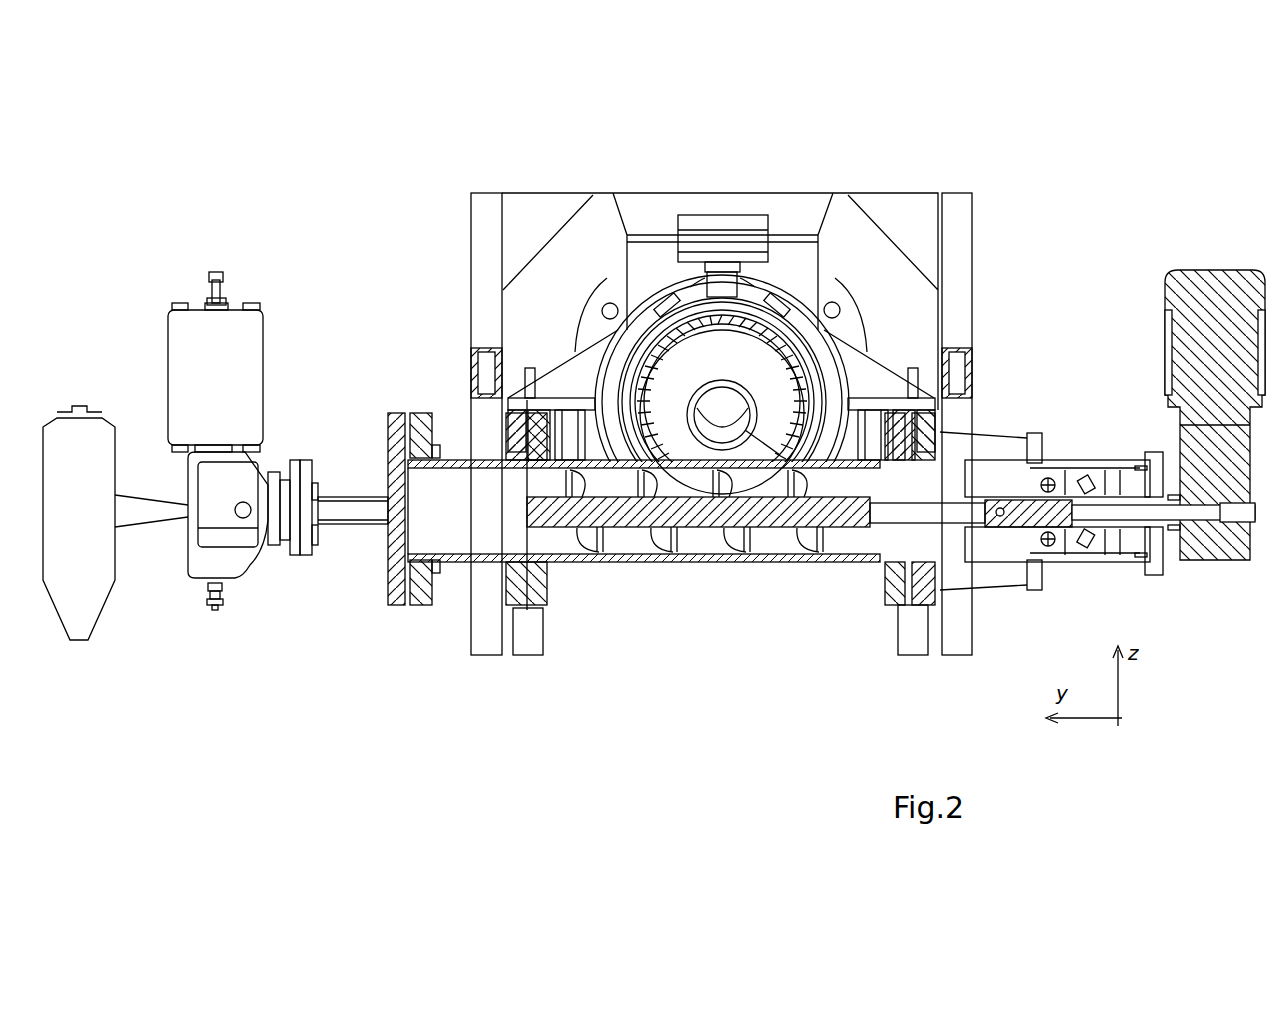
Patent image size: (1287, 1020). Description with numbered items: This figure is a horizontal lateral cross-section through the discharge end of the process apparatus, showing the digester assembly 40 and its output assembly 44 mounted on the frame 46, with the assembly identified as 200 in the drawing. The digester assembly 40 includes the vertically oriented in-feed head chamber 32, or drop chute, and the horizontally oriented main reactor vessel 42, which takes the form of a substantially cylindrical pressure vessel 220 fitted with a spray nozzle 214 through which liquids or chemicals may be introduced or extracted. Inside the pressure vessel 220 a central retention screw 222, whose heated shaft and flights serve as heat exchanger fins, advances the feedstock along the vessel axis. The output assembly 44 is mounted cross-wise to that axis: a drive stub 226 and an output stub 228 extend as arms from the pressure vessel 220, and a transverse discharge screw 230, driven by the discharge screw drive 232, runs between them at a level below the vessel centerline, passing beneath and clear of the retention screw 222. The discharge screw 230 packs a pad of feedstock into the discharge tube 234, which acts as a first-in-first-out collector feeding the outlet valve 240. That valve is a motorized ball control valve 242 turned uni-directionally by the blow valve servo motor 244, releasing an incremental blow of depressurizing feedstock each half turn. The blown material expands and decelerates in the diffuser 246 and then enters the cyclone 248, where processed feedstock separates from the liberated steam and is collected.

The in-feed head chamber 32 is at (822, 252).
The digester assembly 40 is at (773, 327).
The main reactor vessel 42 is at (775, 357).
The output assembly 44 is at (263, 375).
The frame 46 is at (965, 232).
The feed assembly 200 is at (803, 282).
The spray nozzle 214 is at (740, 222).
The pressure vessel 220 is at (780, 383).
The retention screw 222 is at (848, 380).
The drive stub 226 is at (1110, 557).
The output stub 228 is at (453, 562).
The discharge screw 230 is at (648, 533).
The discharge screw drive 232 is at (1222, 270).
The discharge tube 234 is at (338, 530).
The outlet valve 240 is at (233, 585).
The ball control valve 242 is at (243, 565).
The blow valve servo motor 244 is at (192, 305).
The diffuser 246 is at (150, 525).
The cyclone 248 is at (100, 615).